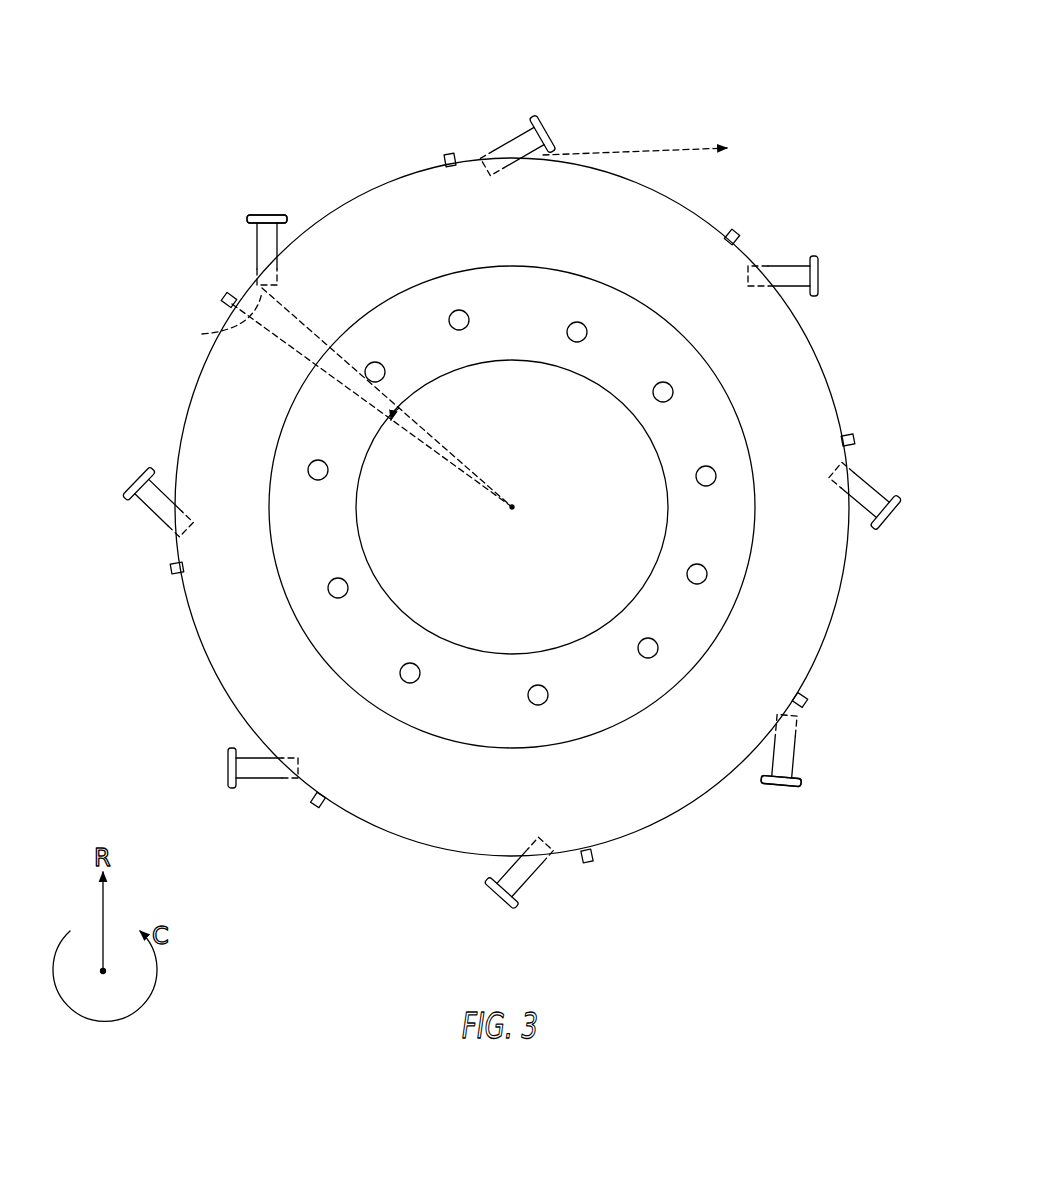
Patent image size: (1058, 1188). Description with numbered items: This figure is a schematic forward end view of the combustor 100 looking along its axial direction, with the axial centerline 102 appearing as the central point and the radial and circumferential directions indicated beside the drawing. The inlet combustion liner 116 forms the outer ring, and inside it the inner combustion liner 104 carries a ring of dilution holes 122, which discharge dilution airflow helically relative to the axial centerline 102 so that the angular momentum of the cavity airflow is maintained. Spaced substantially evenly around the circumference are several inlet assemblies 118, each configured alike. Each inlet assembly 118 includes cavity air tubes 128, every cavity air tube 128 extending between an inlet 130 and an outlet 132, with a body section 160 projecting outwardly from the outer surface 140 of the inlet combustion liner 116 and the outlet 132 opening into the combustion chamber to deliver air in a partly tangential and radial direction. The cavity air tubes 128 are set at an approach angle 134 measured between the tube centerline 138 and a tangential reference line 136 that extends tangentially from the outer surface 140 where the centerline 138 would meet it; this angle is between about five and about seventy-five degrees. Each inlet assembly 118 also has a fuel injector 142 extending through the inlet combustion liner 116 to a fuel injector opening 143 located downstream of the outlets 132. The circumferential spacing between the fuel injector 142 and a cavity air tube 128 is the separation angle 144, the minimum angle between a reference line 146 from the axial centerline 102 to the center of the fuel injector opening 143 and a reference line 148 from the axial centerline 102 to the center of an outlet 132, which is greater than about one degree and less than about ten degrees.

The combustor 100 is at (512, 448).
The axial centerline 102 is at (512, 507).
The inner combustion liner 104 is at (686, 240).
The inlet combustion liner 116 is at (383, 172).
The inlet assembly 118 is at (504, 481).
The dilution holes 122 is at (461, 308).
The cavity air tube 128 is at (522, 135).
The inlet 130 is at (270, 202).
The outlet 132 is at (773, 698).
The approach angle 134 is at (549, 150).
The tangential reference line 136 is at (690, 150).
The centerline 138 is at (556, 125).
The outer surface 140 is at (426, 158).
The fuel injector 142 is at (226, 296).
The fuel injector opening 143 is at (196, 572).
The separation angle 144 is at (413, 425).
The reference line 146 is at (300, 356).
The reference line 148 is at (318, 332).
The body section 160 is at (780, 753).